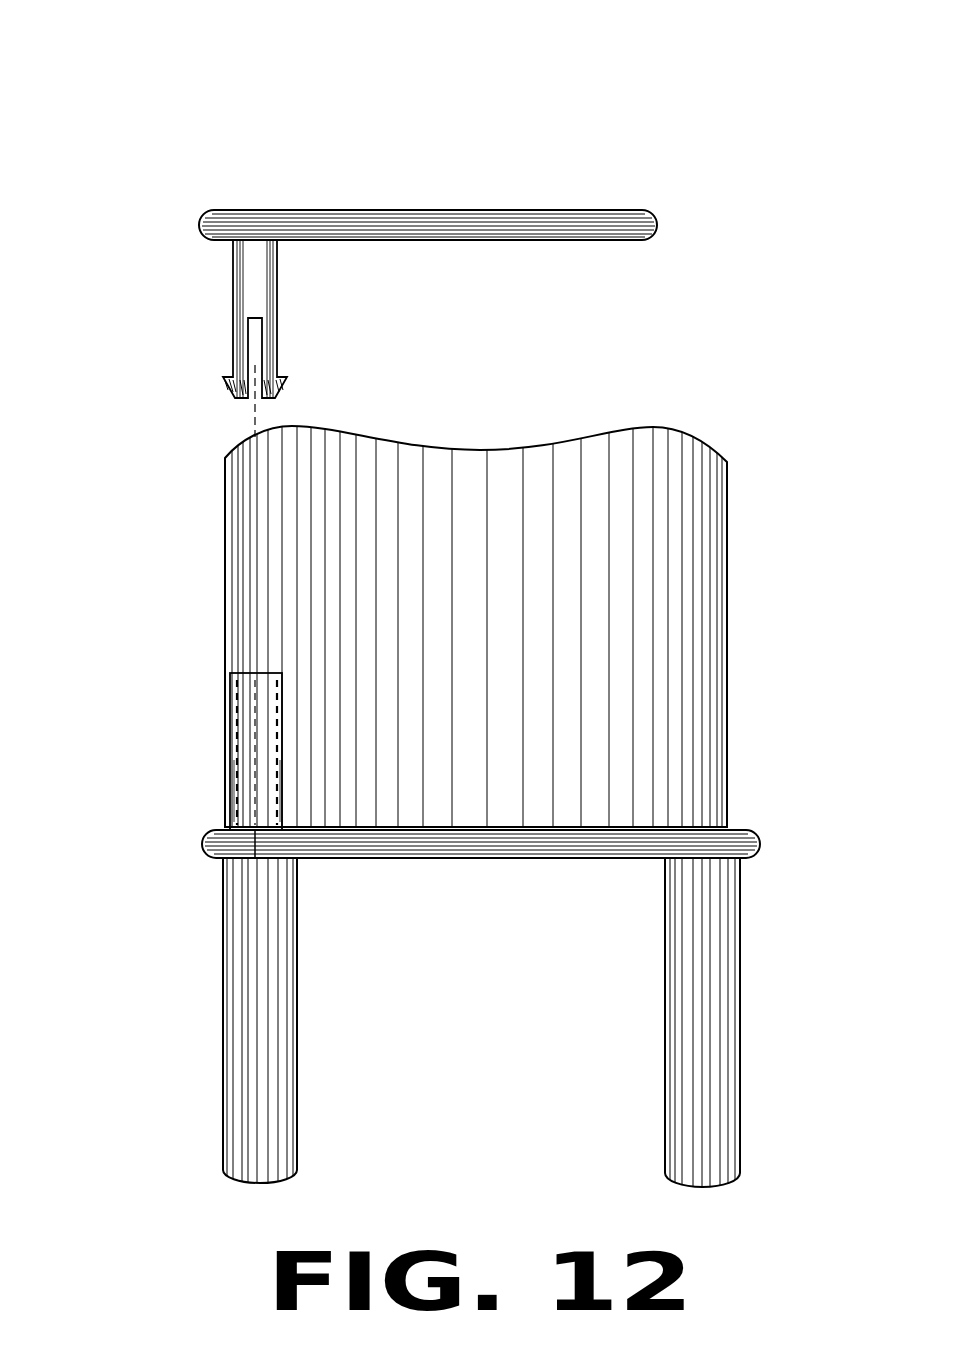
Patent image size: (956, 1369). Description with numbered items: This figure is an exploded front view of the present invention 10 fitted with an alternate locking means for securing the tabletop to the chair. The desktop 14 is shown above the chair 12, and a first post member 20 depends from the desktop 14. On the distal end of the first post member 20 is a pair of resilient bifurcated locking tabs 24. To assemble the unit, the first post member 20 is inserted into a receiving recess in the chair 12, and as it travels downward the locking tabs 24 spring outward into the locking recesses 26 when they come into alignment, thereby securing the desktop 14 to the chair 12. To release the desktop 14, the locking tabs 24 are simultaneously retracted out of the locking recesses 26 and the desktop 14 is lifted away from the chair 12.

The present invention 10 is at (411, 593).
The chair 12 is at (493, 860).
The desktop 14 is at (433, 217).
The first post member 20 is at (278, 291).
The resilient bifurcated locking tabs 24 is at (223, 385).
The locking recesses 26 is at (280, 823).